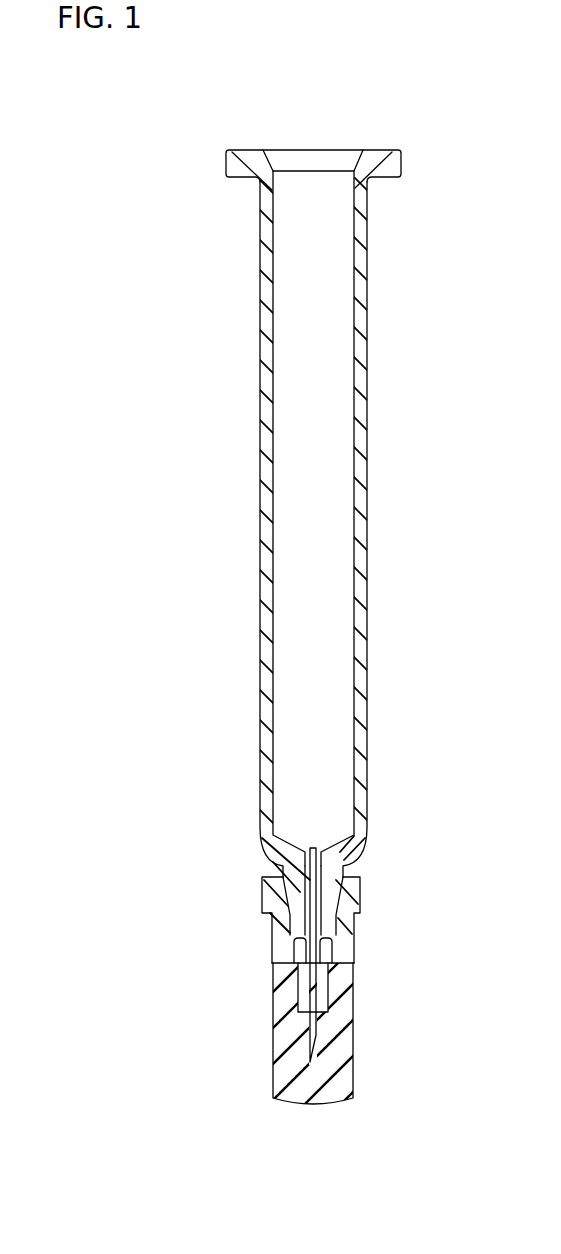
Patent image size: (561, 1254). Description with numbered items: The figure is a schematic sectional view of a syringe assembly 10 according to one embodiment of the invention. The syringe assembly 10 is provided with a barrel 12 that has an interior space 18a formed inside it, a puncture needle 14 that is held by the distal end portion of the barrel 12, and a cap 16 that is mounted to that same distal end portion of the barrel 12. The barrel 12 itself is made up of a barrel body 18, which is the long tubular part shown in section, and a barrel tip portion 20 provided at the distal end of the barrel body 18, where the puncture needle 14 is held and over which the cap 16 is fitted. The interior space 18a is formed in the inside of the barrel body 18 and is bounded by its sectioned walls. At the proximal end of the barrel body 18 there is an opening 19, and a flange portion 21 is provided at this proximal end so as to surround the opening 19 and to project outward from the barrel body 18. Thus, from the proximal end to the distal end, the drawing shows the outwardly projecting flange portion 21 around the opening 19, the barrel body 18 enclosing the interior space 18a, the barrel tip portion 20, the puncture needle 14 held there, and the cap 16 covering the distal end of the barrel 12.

The syringe assembly 10 is at (184, 123).
The barrel 12 is at (318, 500).
The puncture needle 14 is at (310, 938).
The cap 16 is at (365, 1016).
The barrel body 18 is at (368, 504).
The interior space 18a is at (280, 506).
The opening 19 is at (306, 160).
The barrel tip portion 20 is at (328, 897).
The flange portion 21 is at (386, 158).